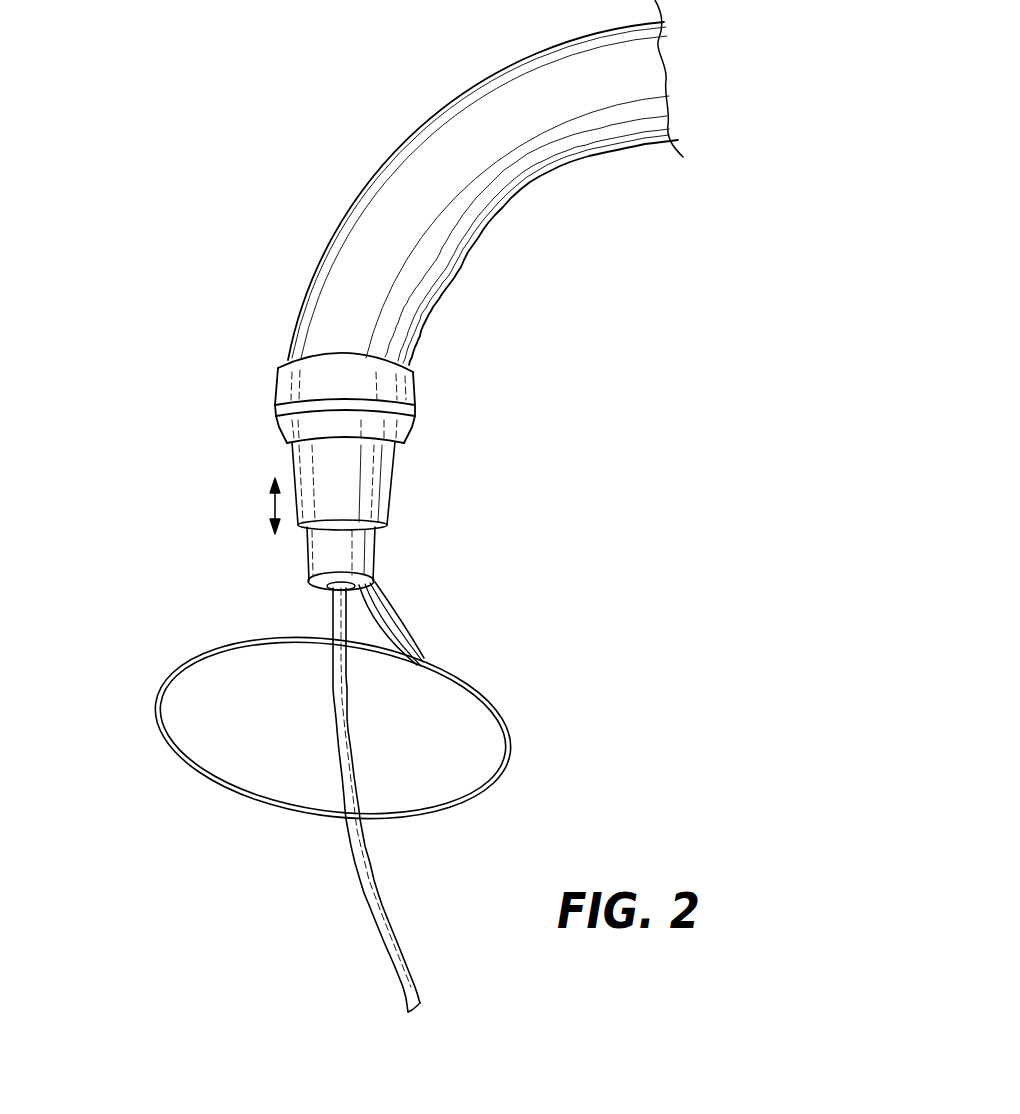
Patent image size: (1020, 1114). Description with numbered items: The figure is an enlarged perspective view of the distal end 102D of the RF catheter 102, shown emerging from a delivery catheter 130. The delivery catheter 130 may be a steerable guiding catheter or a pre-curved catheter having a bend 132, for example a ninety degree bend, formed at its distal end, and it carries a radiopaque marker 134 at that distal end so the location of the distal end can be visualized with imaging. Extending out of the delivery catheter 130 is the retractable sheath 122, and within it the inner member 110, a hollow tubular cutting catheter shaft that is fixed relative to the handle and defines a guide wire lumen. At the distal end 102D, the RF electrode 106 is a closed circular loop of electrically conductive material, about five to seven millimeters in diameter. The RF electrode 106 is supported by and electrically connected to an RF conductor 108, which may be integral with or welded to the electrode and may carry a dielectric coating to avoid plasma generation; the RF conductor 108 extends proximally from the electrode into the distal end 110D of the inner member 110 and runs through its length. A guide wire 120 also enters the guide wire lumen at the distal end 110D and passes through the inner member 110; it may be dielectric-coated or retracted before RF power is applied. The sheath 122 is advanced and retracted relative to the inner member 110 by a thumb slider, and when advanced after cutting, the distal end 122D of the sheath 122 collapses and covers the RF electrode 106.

The RF catheter 102 is at (567, 318).
The distal end of RF catheter 102D is at (138, 508).
The RF electrode 106 is at (158, 690).
The RF conductor 108 is at (410, 632).
The inner member 110 is at (373, 552).
The distal end of inner member 110D is at (313, 597).
The guide wire 120 is at (357, 877).
The retractable sheath 122 is at (373, 478).
The distal end of sheath 122D is at (307, 543).
The delivery catheter 130 is at (599, 99).
The bend 132 is at (383, 110).
The radiopaque marker 134 is at (292, 390).